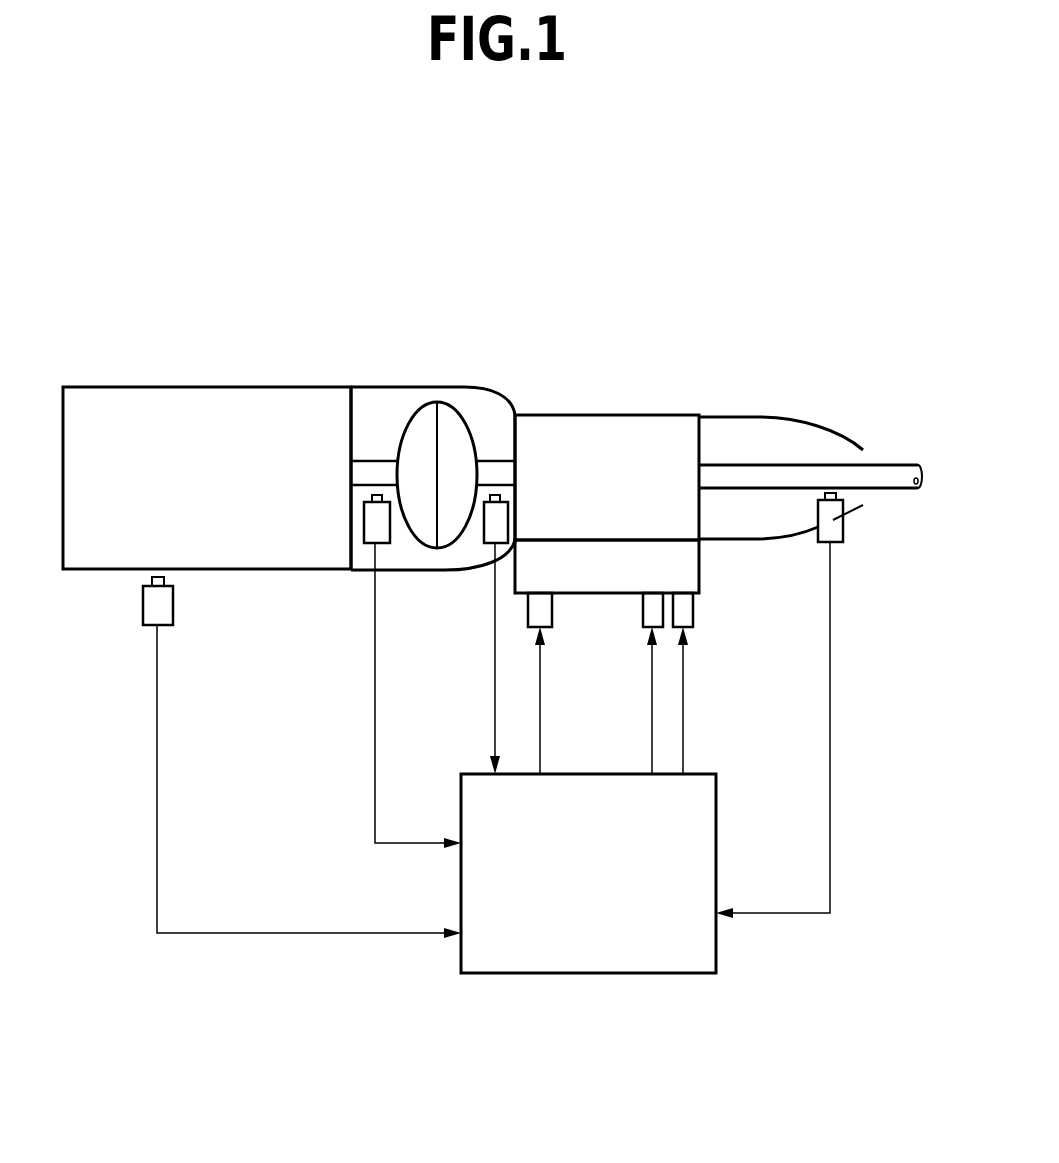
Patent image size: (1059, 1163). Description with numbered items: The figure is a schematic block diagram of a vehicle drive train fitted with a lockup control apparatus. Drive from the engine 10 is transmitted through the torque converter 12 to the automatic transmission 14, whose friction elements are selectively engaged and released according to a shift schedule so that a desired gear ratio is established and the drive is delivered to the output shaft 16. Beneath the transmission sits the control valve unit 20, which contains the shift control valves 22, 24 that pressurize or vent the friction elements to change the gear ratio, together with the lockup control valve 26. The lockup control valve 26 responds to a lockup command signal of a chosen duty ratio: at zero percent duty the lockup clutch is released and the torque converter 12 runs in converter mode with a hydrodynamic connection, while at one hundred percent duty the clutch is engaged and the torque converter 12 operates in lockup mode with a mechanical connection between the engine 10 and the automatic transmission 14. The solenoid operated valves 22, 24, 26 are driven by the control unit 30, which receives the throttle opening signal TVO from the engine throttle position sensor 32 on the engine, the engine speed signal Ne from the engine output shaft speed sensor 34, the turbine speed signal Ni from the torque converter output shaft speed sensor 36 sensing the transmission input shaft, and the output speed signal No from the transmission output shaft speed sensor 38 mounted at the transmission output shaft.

The engine 10 is at (208, 387).
The torque converter 12 is at (458, 413).
The automatic transmission 14 is at (625, 415).
The output shaft 16 is at (755, 465).
The control valve unit 20 is at (700, 567).
The shift control valve 22 is at (640, 610).
The shift control valve 24 is at (686, 610).
The lockup control valve 26 is at (552, 608).
The control unit 30 is at (720, 786).
The engine throttle position sensor 32 is at (143, 607).
The engine output shaft speed sensor 34 is at (373, 547).
The torque converter output shaft speed sensor 36 is at (480, 532).
The transmission output shaft speed sensor 38 is at (843, 530).